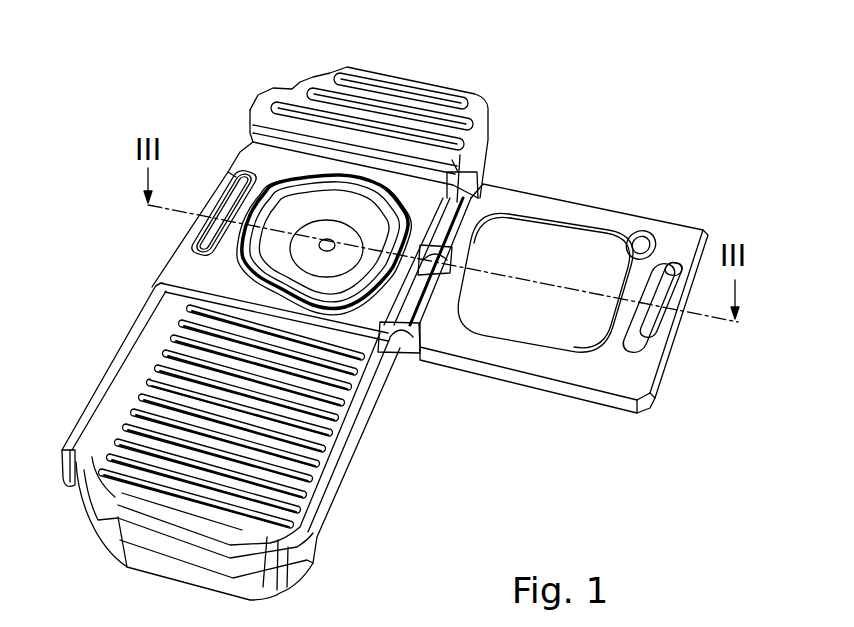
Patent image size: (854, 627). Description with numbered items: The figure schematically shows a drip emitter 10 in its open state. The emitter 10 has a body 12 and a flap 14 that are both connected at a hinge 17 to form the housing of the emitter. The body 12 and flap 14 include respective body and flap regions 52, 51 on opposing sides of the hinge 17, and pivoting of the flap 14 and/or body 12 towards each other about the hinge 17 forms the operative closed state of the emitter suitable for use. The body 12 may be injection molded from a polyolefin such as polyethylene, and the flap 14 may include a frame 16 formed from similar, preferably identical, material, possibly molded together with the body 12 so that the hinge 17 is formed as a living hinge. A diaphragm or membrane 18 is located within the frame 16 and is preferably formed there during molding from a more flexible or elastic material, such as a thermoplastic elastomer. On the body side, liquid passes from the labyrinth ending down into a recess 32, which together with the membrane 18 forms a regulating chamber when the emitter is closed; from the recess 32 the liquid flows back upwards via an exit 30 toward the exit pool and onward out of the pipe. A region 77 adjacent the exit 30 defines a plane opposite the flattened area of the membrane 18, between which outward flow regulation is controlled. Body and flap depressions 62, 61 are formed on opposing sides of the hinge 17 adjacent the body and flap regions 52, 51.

The drip emitter 10 is at (612, 68).
The body 12 is at (116, 361).
The flap 14 is at (637, 447).
The frame 16 is at (524, 363).
The hinge 17 is at (404, 352).
The membrane 18 is at (556, 277).
The exit 30 is at (323, 236).
The recess 32 is at (337, 207).
The flap region 51 is at (487, 223).
The body region 52 is at (420, 195).
The flap depression 61 is at (464, 205).
The body depression 62 is at (443, 212).
The region adjacent exit 77 is at (298, 253).